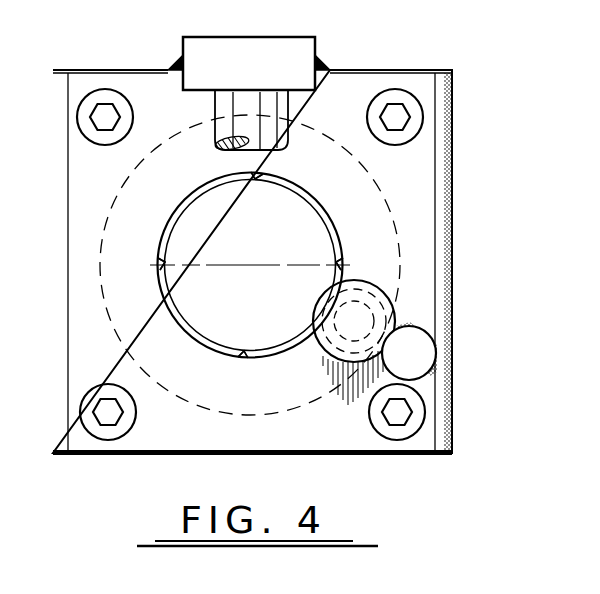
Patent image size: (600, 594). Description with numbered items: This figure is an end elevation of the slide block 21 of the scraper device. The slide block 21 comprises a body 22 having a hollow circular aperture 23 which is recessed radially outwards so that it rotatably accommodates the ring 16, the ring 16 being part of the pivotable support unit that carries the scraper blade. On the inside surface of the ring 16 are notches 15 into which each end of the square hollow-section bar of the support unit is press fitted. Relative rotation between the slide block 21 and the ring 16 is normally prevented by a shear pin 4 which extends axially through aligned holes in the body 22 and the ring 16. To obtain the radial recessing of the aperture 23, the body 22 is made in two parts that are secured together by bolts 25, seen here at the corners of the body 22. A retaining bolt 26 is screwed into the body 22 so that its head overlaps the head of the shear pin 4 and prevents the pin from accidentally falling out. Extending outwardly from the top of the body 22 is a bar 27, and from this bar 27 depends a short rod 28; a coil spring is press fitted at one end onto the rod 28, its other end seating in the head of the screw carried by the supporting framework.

The shear pin 4 is at (375, 310).
The notches 15 is at (252, 175).
The ring 16 is at (380, 190).
The slide block 21 is at (455, 93).
The body 22 is at (410, 155).
The hollow circular aperture 23 is at (212, 295).
The bolts 25 is at (100, 97).
The retaining bolt 26 is at (415, 347).
The bar 27 is at (210, 68).
The short rod 28 is at (230, 127).